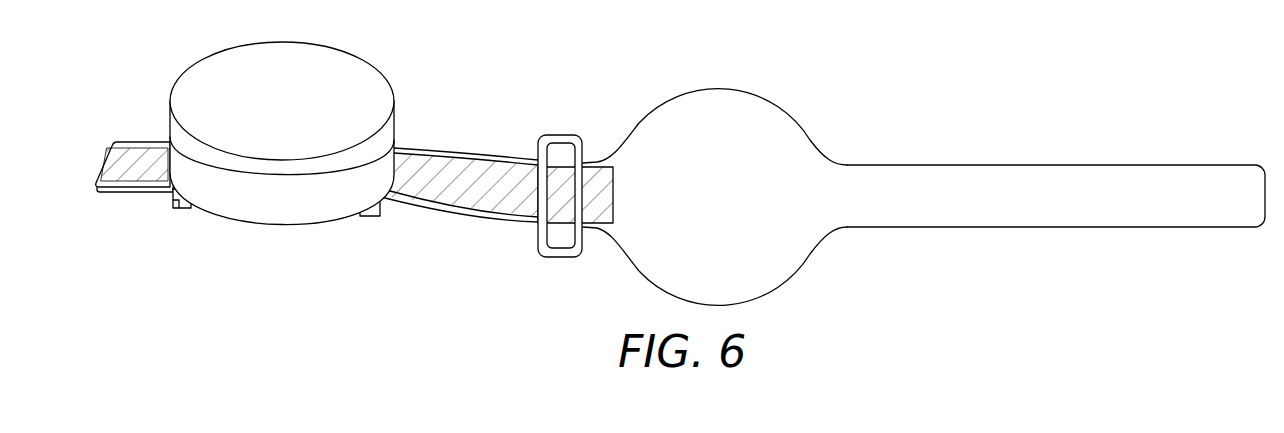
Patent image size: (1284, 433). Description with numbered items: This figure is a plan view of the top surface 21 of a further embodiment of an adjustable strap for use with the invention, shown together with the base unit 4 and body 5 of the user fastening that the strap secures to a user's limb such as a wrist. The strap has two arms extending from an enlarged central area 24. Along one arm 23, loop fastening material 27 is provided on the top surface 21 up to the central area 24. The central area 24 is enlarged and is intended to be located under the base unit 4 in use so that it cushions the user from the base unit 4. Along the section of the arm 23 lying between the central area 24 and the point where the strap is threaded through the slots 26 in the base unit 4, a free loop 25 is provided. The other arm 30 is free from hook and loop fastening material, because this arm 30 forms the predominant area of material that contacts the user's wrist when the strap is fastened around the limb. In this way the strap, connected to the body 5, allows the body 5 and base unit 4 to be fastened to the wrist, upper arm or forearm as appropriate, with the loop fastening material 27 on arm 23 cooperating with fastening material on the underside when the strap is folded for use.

The base unit 4 is at (283, 164).
The body 5 is at (283, 214).
The top surface 21 is at (987, 93).
The arm 23 is at (132, 150).
The central area 24 is at (715, 88).
The free loop 25 is at (560, 134).
The slots 26 is at (379, 208).
The loop fastening material 27 is at (485, 205).
The other arm 30 is at (1183, 172).